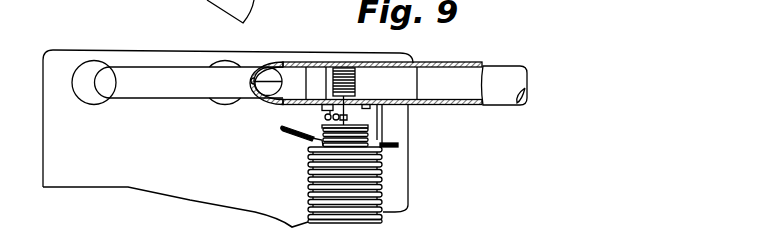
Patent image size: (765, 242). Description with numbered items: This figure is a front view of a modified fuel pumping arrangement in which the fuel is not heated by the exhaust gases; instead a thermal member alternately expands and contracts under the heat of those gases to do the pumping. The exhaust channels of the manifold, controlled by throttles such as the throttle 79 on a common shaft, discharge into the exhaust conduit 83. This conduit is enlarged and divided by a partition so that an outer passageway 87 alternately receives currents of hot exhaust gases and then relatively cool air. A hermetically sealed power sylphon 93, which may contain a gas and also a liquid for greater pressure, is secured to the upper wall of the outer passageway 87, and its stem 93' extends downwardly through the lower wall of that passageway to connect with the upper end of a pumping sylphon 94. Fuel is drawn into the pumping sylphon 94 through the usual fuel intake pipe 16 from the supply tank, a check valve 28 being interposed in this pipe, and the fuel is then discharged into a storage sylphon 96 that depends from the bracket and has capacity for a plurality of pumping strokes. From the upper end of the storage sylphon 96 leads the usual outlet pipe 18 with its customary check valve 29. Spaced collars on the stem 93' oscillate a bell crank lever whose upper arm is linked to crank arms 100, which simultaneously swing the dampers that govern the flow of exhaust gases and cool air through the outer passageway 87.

The throttle 79 is at (270, 67).
The power sylphon 93 is at (343, 63).
The outer passageway 87 is at (370, 75).
The stem 93' is at (361, 100).
The exhaust conduit 83 is at (500, 75).
The crank arms 100 is at (320, 107).
The pumping sylphon 94 is at (362, 133).
The outlet pipe 18 is at (282, 130).
The check valve 29 is at (308, 140).
The fuel intake pipe 16 is at (386, 145).
The check valve 28 is at (384, 150).
The storage sylphon 96 is at (385, 201).